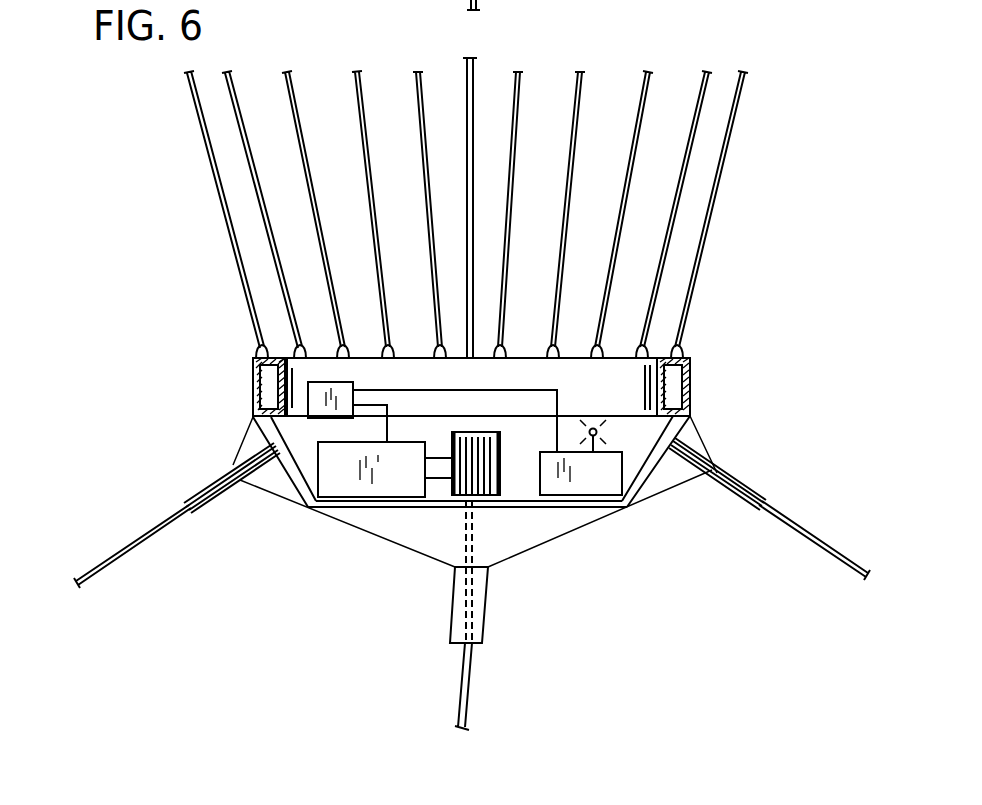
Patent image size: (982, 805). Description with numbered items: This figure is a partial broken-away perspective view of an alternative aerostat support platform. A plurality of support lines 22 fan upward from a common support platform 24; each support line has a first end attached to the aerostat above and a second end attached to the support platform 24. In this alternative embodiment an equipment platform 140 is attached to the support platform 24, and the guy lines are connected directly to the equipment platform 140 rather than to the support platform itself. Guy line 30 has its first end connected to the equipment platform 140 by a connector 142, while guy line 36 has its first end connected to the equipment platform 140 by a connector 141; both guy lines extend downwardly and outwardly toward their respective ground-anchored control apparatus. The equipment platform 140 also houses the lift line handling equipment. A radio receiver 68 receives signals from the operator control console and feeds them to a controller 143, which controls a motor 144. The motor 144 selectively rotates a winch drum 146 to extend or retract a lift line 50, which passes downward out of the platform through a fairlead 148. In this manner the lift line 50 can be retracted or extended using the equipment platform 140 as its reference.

The support lines 22 is at (710, 228).
The support platform 24 is at (700, 370).
The guy line 30 is at (769, 509).
The guy line 36 is at (174, 488).
The lift line 50 is at (470, 687).
The radio receiver 68 is at (573, 483).
The equipment platform 140 is at (678, 433).
The connector 141 is at (218, 480).
The connector 142 is at (722, 472).
The controller 143 is at (323, 375).
The motor 144 is at (348, 485).
The winch drum 146 is at (503, 473).
The fairlead 148 is at (485, 607).